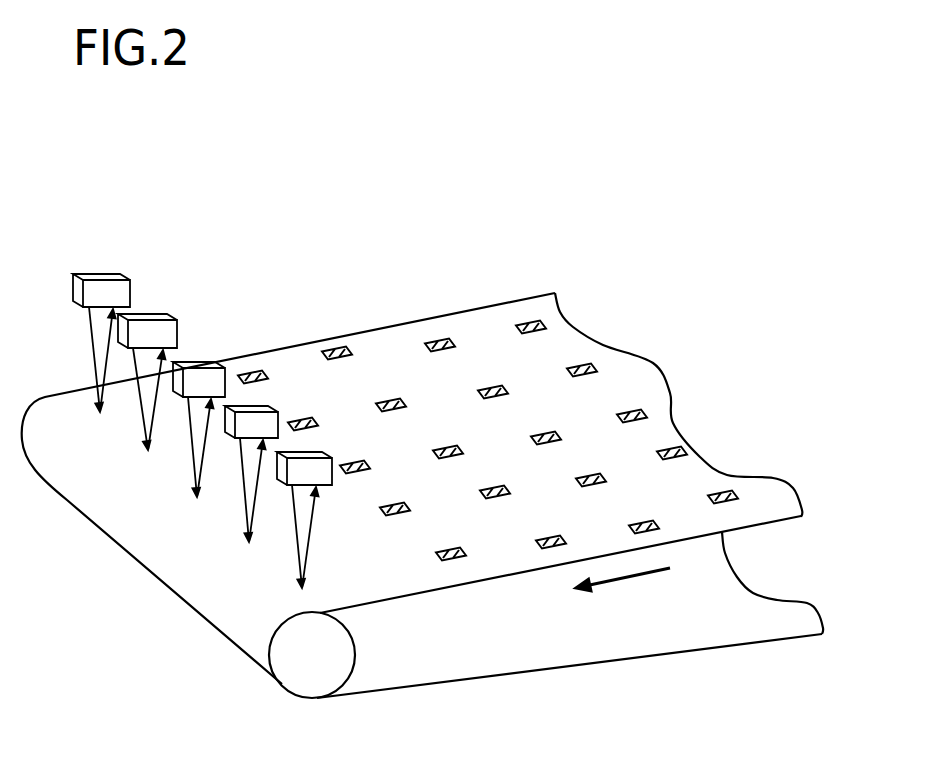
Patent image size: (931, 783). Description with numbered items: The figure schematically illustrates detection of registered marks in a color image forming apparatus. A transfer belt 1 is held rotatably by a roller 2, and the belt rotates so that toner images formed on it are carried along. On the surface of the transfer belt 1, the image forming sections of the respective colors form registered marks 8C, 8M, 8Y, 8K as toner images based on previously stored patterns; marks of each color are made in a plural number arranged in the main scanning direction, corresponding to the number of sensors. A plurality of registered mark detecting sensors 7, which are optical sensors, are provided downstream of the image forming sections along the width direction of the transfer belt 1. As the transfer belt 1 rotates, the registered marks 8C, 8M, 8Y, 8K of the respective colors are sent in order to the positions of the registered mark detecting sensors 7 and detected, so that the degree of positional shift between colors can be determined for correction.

The transfer belt 1 is at (778, 495).
The roller 2 is at (307, 677).
The registered mark detecting sensor 7 is at (103, 274).
The registered mark 8C is at (247, 372).
The registered mark 8M is at (342, 340).
The registered mark 8Y is at (438, 340).
The registered mark 8K is at (535, 322).